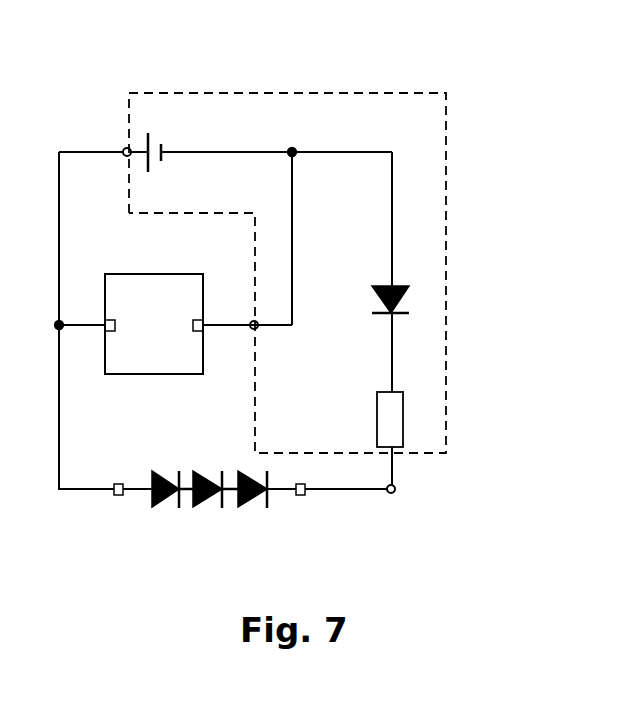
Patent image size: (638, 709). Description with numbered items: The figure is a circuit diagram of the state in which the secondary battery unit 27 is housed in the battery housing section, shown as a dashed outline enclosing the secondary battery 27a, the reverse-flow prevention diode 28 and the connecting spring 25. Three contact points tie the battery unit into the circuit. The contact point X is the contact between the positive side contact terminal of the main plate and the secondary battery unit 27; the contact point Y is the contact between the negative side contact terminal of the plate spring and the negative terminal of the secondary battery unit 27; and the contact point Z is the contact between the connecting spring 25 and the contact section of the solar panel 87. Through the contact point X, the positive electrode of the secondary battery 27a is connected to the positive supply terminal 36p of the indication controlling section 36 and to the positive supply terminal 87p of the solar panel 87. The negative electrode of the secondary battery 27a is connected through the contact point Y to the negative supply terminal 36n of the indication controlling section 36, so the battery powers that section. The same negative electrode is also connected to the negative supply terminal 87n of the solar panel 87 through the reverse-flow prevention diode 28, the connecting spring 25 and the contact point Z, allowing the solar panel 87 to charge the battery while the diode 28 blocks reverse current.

The contact point X is at (125, 148).
The contact point Y is at (252, 330).
The contact point Z is at (391, 494).
The secondary battery unit 27 is at (446, 220).
The secondary battery 27a is at (160, 131).
The reverse-flow prevention diode 28 is at (417, 298).
The connecting spring 25 is at (403, 420).
The indication controlling section 36 is at (113, 355).
The positive supply terminal 36p is at (105, 324).
The negative supply terminal 36n is at (203, 324).
The solar panel 87 is at (222, 516).
The positive supply terminal 87p is at (118, 496).
The negative supply terminal 87n is at (305, 496).